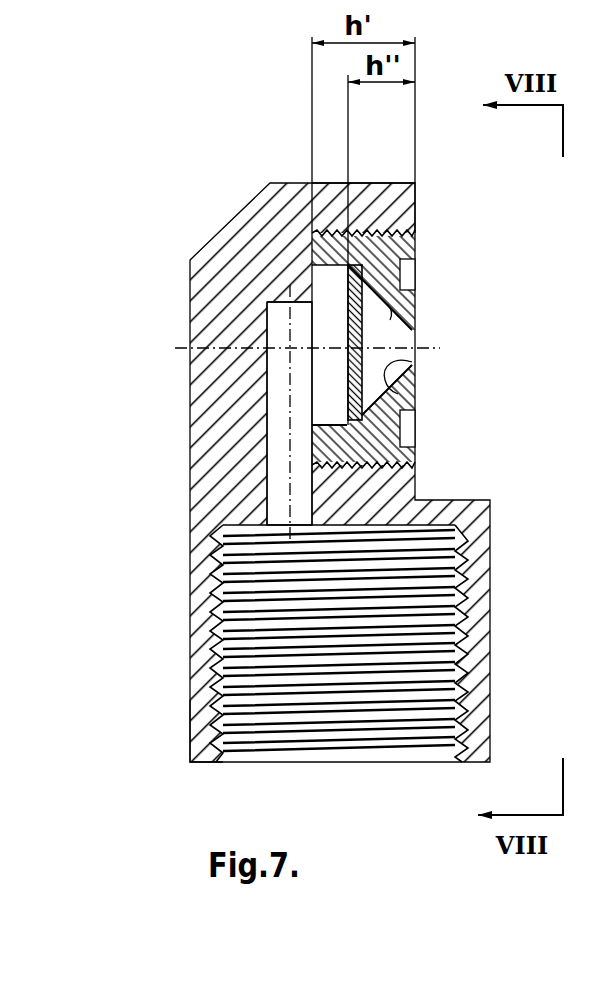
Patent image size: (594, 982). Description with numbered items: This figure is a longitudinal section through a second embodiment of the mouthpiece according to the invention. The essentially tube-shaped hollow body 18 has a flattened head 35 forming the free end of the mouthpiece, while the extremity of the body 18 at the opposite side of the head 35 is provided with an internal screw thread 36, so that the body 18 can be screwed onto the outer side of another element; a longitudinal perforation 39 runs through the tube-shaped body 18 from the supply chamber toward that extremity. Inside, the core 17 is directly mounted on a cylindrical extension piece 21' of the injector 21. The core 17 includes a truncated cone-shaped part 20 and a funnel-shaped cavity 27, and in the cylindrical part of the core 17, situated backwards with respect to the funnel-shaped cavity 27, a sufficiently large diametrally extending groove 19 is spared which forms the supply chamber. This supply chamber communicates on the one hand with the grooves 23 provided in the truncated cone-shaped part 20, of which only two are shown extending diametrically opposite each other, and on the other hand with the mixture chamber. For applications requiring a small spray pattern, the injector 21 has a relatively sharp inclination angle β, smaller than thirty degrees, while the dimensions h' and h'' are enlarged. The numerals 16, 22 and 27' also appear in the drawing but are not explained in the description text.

The threaded connection portion 16 is at (170, 530).
The core 17 is at (338, 373).
The body 18 is at (178, 408).
The groove 19 is at (312, 233).
The truncated cone-shaped part 20 is at (405, 277).
The injector 21 is at (408, 413).
The cylindrical extension piece 21' is at (444, 416).
The conical seat surface 22 is at (414, 333).
The grooves 23 is at (349, 262).
The funnel-shaped cavity 27 is at (460, 342).
The plate edge 27' is at (246, 268).
The head 35 is at (402, 201).
The screw thread 36 is at (276, 735).
The longitudinal perforation 39 is at (197, 710).